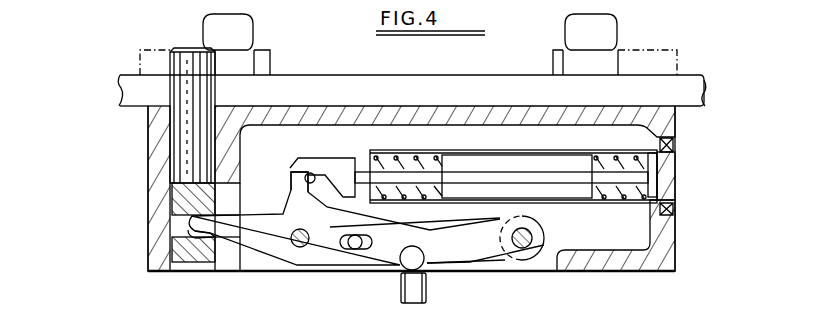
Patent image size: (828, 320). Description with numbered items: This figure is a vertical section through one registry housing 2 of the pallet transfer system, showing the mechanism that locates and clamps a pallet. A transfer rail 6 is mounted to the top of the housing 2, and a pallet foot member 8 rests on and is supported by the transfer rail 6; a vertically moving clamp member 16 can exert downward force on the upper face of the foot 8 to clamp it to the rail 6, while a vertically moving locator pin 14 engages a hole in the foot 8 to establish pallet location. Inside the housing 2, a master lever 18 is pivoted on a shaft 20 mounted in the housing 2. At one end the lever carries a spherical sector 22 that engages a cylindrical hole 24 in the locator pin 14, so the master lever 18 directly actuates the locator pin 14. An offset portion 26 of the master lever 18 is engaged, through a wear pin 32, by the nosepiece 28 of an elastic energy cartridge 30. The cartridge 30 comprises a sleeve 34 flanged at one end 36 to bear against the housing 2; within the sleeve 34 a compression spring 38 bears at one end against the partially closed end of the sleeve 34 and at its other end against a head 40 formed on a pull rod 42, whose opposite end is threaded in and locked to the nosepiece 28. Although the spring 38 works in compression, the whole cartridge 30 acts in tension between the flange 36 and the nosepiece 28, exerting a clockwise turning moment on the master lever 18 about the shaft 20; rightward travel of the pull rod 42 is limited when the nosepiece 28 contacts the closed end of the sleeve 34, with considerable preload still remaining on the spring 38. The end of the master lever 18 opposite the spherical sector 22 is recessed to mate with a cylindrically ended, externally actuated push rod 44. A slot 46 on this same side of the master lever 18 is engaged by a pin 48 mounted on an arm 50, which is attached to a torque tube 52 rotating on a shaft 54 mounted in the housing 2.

The housing 2 is at (677, 243).
The transfer rail 6 is at (128, 89).
The foot member 8 is at (270, 62).
The locator pin 14 is at (180, 171).
The clamp member 16 is at (248, 30).
The master lever 18 is at (264, 258).
The shaft 20 is at (291, 237).
The spherical sector 22 is at (205, 228).
The cylindrical hole 24 is at (200, 222).
The offset portion 26 is at (340, 208).
The nosepiece 28 is at (323, 158).
The elastic energy cartridge 30 is at (487, 143).
The wear pin 32 is at (304, 177).
The sleeve 34 is at (613, 201).
The flange 36 is at (673, 144).
The compression spring 38 is at (418, 151).
The head 40 is at (657, 175).
The pull rod 42 is at (430, 176).
The push rod 44 is at (402, 290).
The slot 46 is at (345, 245).
The pin 48 is at (355, 246).
The arm 50 is at (473, 259).
The torque tube 52 is at (530, 255).
The shaft 54 is at (517, 250).